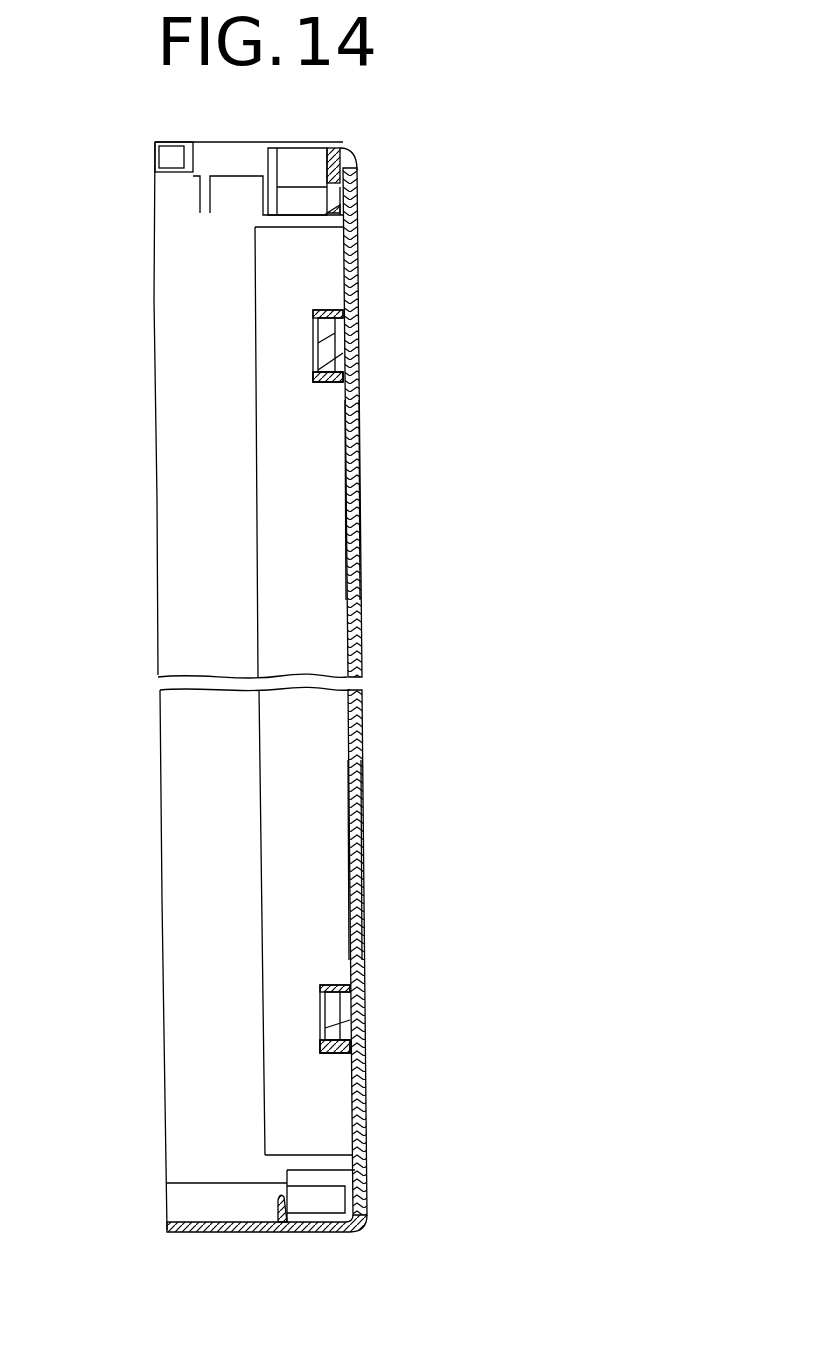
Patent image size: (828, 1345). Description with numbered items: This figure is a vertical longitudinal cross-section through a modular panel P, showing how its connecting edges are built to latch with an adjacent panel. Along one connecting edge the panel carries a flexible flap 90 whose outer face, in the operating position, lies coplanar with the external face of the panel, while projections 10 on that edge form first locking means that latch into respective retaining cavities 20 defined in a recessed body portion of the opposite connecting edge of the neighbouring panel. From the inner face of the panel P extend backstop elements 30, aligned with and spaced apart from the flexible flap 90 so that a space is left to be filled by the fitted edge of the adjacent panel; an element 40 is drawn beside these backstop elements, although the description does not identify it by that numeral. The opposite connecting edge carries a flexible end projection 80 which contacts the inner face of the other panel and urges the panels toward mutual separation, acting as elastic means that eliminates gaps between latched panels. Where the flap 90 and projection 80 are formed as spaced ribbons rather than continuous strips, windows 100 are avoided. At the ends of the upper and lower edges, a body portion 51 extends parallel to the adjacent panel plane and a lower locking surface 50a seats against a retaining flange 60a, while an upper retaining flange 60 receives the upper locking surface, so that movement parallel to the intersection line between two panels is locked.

The modular panel P is at (232, 126).
The projections 10 is at (347, 508).
The retaining cavities 20 is at (345, 490).
The backstop elements 30 is at (313, 323).
The retaining piece 40 is at (313, 373).
The body portion 51 is at (305, 160).
The retaining flange 60 is at (352, 139).
The retaining flange 60a is at (366, 1207).
The end projection 80 is at (283, 940).
The flexible flap 90 is at (360, 194).
The windows 100 is at (360, 333).
The locking surface 50a is at (302, 1215).